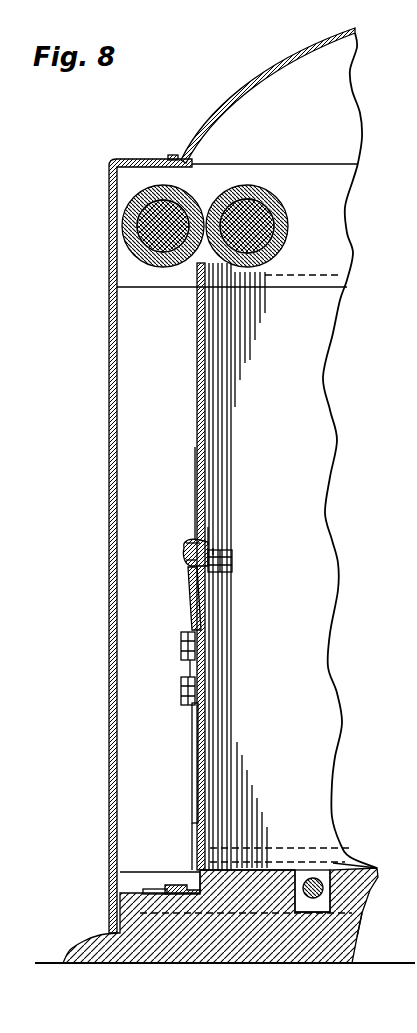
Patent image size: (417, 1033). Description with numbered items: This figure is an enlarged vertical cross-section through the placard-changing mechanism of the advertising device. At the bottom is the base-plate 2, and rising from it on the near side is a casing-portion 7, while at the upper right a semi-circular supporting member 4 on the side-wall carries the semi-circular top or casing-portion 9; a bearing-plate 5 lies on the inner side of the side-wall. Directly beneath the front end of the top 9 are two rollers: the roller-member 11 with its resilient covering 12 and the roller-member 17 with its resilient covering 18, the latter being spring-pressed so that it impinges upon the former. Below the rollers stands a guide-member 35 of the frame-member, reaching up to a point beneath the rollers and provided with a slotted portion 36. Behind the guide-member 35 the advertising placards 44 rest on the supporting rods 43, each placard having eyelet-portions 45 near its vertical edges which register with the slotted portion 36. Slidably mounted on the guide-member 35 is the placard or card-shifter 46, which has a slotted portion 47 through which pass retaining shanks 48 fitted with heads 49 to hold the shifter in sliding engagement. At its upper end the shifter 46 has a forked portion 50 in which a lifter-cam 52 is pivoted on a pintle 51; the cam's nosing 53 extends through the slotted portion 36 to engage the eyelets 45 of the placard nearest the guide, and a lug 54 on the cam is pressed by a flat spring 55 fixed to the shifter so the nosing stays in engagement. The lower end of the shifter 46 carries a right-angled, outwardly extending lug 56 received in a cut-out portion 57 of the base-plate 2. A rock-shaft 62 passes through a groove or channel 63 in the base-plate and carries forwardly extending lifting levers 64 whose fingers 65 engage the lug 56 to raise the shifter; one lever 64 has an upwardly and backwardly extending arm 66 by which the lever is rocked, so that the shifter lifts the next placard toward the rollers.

The base-plate 2 is at (113, 933).
The semi-circular supporting member 4 is at (327, 102).
The bearing-plate 5 is at (333, 238).
The casing-portion 7 is at (110, 396).
The semi-circular top or casing-portion 9 is at (281, 52).
The roller-member 11 is at (148, 240).
The resilient covering 12 is at (127, 218).
The roller-member 17 is at (250, 227).
The resilient covering 18 is at (255, 198).
The guide-member 35 is at (197, 367).
The slotted portion 36 is at (197, 468).
The supporting rod 43 is at (305, 853).
The advertising placard 44 is at (227, 443).
The eyelet-portion 45 is at (230, 562).
The placard or card-shifter 46 is at (197, 823).
The slotted portion 47 is at (193, 752).
The retaining shank 48 is at (190, 665).
The head 49 is at (183, 642).
The forked portion 50 is at (200, 542).
The pintle 51 is at (190, 545).
The lifter-cam 52 is at (187, 563).
The nosing 53 is at (213, 548).
The lug 54 is at (210, 527).
The flat spring 55 is at (187, 583).
The lug 56 is at (173, 887).
The cut-out portion 57 is at (133, 885).
The rock-shaft 62 is at (317, 880).
The groove or channel 63 is at (360, 917).
The lifting lever 64 is at (263, 870).
The finger 65 is at (150, 890).
The upwardly and backwardly extending arm 66 is at (340, 870).